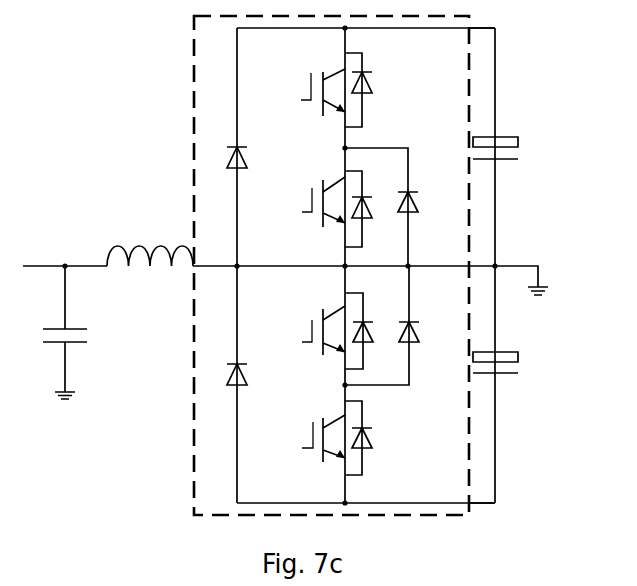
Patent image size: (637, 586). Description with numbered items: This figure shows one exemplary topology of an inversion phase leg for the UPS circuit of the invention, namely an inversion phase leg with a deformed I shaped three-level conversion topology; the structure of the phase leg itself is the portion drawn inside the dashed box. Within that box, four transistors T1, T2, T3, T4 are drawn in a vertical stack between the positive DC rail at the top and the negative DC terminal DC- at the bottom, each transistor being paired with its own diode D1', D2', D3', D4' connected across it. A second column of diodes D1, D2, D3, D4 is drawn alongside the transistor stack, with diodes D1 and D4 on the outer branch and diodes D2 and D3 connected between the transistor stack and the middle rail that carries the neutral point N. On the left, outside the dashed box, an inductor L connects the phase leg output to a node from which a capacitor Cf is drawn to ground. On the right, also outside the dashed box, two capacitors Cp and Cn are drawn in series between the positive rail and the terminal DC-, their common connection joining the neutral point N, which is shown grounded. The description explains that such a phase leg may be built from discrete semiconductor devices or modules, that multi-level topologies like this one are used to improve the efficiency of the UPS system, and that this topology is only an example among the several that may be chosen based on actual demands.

The filter inductor L is at (150, 236).
The filter capacitor Cf is at (82, 332).
The clamping diode D1 is at (222, 138).
The clamping diode D2 is at (426, 200).
The clamping diode D3 is at (428, 330).
The clamping diode D4 is at (222, 397).
The switching transistor (IGBT) T1 is at (311, 92).
The switching transistor (IGBT) T2 is at (311, 202).
The switching transistor (IGBT) T3 is at (310, 330).
The switching transistor (IGBT) T4 is at (310, 438).
The freewheeling diode of T1 D1' is at (384, 90).
The freewheeling diode of T2 D2' is at (376, 215).
The freewheeling diode of T3 D3' is at (374, 327).
The freewheeling diode of T4 D4' is at (386, 438).
The positive DC link capacitor Cp is at (520, 143).
The negative DC link capacitor Cn is at (520, 368).
The neutral point N is at (521, 259).
The negative DC terminal DC- is at (516, 497).